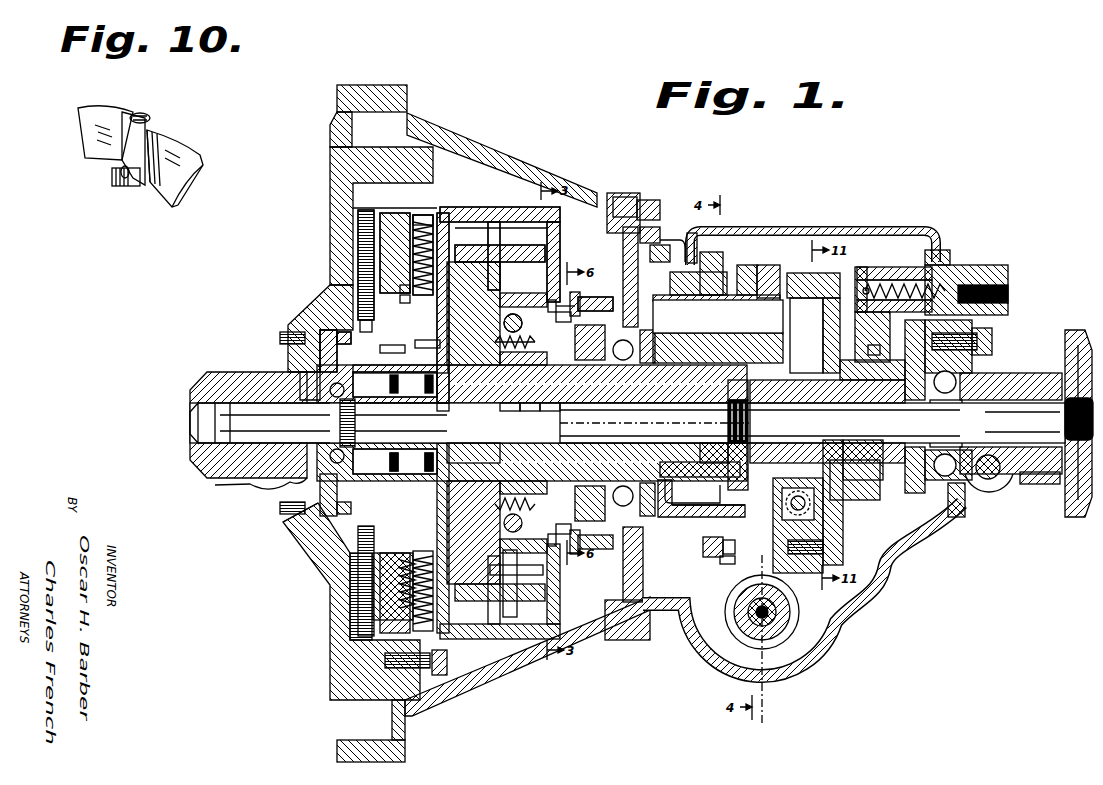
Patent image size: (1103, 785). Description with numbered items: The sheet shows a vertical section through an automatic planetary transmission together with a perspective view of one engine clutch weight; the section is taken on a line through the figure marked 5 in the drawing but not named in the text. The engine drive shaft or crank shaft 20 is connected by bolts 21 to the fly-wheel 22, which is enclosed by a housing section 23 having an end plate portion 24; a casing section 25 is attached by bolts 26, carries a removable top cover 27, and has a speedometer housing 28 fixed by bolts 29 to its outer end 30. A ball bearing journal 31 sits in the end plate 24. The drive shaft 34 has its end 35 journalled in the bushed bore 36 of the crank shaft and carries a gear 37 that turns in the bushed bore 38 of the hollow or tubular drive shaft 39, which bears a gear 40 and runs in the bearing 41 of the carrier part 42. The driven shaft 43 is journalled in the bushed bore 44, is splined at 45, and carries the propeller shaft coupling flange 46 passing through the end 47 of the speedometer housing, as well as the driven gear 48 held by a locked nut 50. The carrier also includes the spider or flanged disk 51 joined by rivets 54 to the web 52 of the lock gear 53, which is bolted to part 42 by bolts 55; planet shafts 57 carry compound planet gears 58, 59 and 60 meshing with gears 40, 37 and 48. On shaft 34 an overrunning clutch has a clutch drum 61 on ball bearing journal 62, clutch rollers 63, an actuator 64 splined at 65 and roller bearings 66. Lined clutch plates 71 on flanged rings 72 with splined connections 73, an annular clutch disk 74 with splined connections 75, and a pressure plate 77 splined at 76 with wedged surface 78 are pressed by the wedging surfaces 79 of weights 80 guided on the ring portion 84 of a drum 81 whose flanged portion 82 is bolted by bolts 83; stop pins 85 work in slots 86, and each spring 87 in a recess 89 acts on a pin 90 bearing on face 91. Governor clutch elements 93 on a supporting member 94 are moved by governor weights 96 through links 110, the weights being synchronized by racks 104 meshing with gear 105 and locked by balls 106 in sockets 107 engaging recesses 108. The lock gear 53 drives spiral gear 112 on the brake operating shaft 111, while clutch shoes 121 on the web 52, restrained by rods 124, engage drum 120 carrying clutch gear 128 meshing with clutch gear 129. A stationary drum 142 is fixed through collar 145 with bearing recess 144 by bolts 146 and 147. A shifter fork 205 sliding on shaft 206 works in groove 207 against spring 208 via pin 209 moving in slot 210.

In FIG. 1, the housing 5 is at (350, 185).
In FIG. 1, the drive shaft or crank shaft 20 is at (215, 470).
In FIG. 1, the bolts 21 is at (283, 335).
In FIG. 1, the fly-wheel 22 is at (312, 555).
In FIG. 1, the housing section 23 is at (545, 175).
In FIG. 1, the end plate portion 24 is at (625, 258).
In FIG. 1, the casing section 25 is at (913, 562).
In FIG. 1, the bolts 26 is at (635, 197).
In FIG. 1, the top cover 27 is at (786, 230).
In FIG. 1, the speedometer housing 28 is at (1000, 492).
In FIG. 1, the bolts 29 is at (993, 342).
In FIG. 1, the outer end 30 is at (966, 265).
In FIG. 1, the ball bearing journal 31 is at (697, 507).
In FIG. 1, the drive shaft 34 is at (433, 476).
In FIG. 1, the end of drive shaft 35 is at (250, 403).
In FIG. 1, the bushed bore 36 is at (250, 484).
In FIG. 1, the gear 37 is at (700, 474).
In FIG. 1, the bushed bore 38 is at (655, 425).
In FIG. 1, the hollow or tubular drive shaft 39 is at (530, 410).
In FIG. 1, the gear 40 is at (692, 491).
In FIG. 1, the bearing 41 is at (655, 423).
In FIG. 1, the part of planet gear carrier 42 is at (708, 521).
In FIG. 1, the driven shaft 43 is at (934, 467).
In FIG. 1, the bushed bore 44 is at (601, 502).
In FIG. 1, the splines 45 is at (721, 456).
In FIG. 1, the propeller shaft coupling flange 46 is at (1068, 370).
In FIG. 1, the end of speedometer housing 47 is at (1040, 482).
In FIG. 1, the driven gear 48 is at (714, 475).
In FIG. 1, the nut 50 is at (816, 435).
In FIG. 1, the spider or flanged disk 51 is at (641, 421).
In FIG. 1, the web 52 is at (869, 506).
In FIG. 1, the lock gear 53 is at (728, 565).
In FIG. 1, the rivets 54 is at (795, 495).
In FIG. 1, the bolts 55 is at (714, 548).
In FIG. 1, the planet shafts 57 is at (805, 275).
In FIG. 1, the planet gear 58 is at (672, 275).
In FIG. 1, the planet gear 59 is at (722, 258).
In FIG. 1, the planet gear 60 is at (745, 275).
In FIG. 1, the clutch drum 61 is at (400, 362).
In FIG. 1, the ball bearing journal 62 is at (342, 423).
In FIG. 1, the clutch rollers 63 is at (395, 477).
In FIG. 1, the actuator 64 is at (451, 419).
In FIG. 1, the spline 65 is at (401, 410).
In FIG. 1, the roller bearings 66 is at (408, 473).
In FIG. 1, the lined clutch plates 71 is at (362, 262).
In FIG. 1, the flanged rings 72 is at (342, 330).
In FIG. 1, the splined connections 73 is at (329, 351).
In FIG. 1, the annular clutch disk or plate 74 is at (360, 250).
In FIG. 1, the splined connections 75 is at (352, 208).
In FIG. 1, the splined connection 76 is at (422, 215).
In FIG. 1, the annular pressure plate 77 is at (380, 230).
In FIG. 10, the inclined or wedged surface 78 is at (122, 152).
In FIG. 1, the inclined or wedged surface 78 is at (362, 600).
In FIG. 1, the inclined or wedging surfaces 79 is at (355, 585).
In FIG. 10, the speed responsive elements or weights 80 is at (150, 200).
In FIG. 1, the speed responsive elements or weights 80 is at (402, 560).
In FIG. 1, the drum 81 is at (520, 212).
In FIG. 1, the flanged portion 82 is at (445, 675).
In FIG. 1, the bolts 83 is at (432, 660).
In FIG. 1, the annular ring or plate portion 84 is at (470, 212).
In FIG. 1, the stop pins 85 is at (427, 348).
In FIG. 10, the slots 86 is at (122, 188).
In FIG. 1, the slots 86 is at (394, 348).
In FIG. 1, the spring 87 is at (405, 303).
In FIG. 10, the recess 89 is at (150, 117).
In FIG. 1, the recess 89 is at (405, 292).
In FIG. 1, the pin 90 is at (424, 225).
In FIG. 1, the annular face 91 is at (443, 215).
In FIG. 1, the governor operated clutch elements 93 is at (560, 226).
In FIG. 1, the supporting member 94 is at (545, 252).
In FIG. 1, the governor weights 96 is at (541, 498).
In FIG. 1, the rack 104 is at (488, 300).
In FIG. 1, the gear 105 is at (475, 446).
In FIG. 1, the balls 106 is at (520, 351).
In FIG. 1, the sockets 107 is at (558, 293).
In FIG. 1, the locking recesses 108 is at (512, 337).
In FIG. 1, the links 110 is at (505, 640).
In FIG. 1, the brake operating shaft 111 is at (748, 622).
In FIG. 1, the spiral gear 112 is at (778, 622).
In FIG. 1, the drum 120 is at (805, 555).
In FIG. 1, the clutch weights or shoes 121 is at (810, 300).
In FIG. 1, the rods 124 is at (806, 505).
In FIG. 1, the clutch gear 128 is at (885, 350).
In FIG. 1, the clutch gear 129 is at (885, 362).
In FIG. 1, the stationary drum 142 is at (543, 416).
In FIG. 1, the bearing recess 144 is at (586, 549).
In FIG. 1, the collar 145 is at (575, 559).
In FIG. 1, the bolts 146 is at (596, 297).
In FIG. 1, the bolts 147 is at (556, 306).
In FIG. 1, the shifter fork 205 is at (905, 267).
In FIG. 1, the shaft 206 is at (962, 268).
In FIG. 1, the annular groove 207 is at (871, 480).
In FIG. 1, the spring 208 is at (885, 335).
In FIG. 1, the pin 209 is at (871, 265).
In FIG. 1, the slot 210 is at (872, 284).